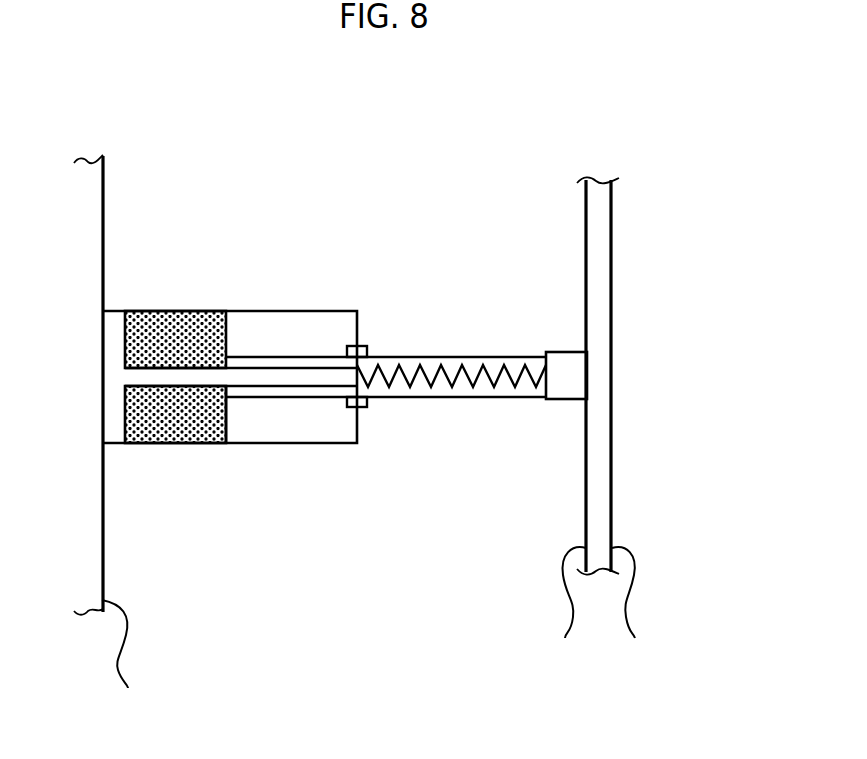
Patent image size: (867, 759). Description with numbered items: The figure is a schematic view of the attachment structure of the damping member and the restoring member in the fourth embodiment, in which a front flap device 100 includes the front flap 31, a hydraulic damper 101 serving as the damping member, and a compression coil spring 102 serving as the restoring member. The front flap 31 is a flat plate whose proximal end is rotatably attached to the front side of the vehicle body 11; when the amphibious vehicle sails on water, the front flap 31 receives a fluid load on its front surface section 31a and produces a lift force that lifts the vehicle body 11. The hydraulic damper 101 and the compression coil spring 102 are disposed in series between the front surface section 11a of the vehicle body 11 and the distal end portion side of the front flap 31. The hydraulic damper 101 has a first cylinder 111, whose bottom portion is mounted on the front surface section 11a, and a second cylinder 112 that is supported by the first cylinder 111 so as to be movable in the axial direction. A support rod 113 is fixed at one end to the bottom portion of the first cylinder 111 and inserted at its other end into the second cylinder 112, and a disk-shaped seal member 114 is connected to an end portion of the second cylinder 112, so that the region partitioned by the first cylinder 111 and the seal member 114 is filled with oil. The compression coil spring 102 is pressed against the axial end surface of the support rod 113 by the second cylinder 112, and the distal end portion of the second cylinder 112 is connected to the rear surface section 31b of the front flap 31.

The vehicle body 11 is at (109, 173).
The front surface section 11a is at (123, 660).
The front flap 31 is at (613, 304).
The front surface section 31a is at (633, 609).
The rear surface section 31b is at (566, 609).
The front flap device 100 is at (666, 147).
The hydraulic damper 101 is at (195, 306).
The compression coil spring 102 is at (430, 355).
The first cylinder 111 is at (297, 445).
The second cylinder 112 is at (483, 397).
The support rod 113 is at (310, 373).
The seal member 114 is at (228, 425).